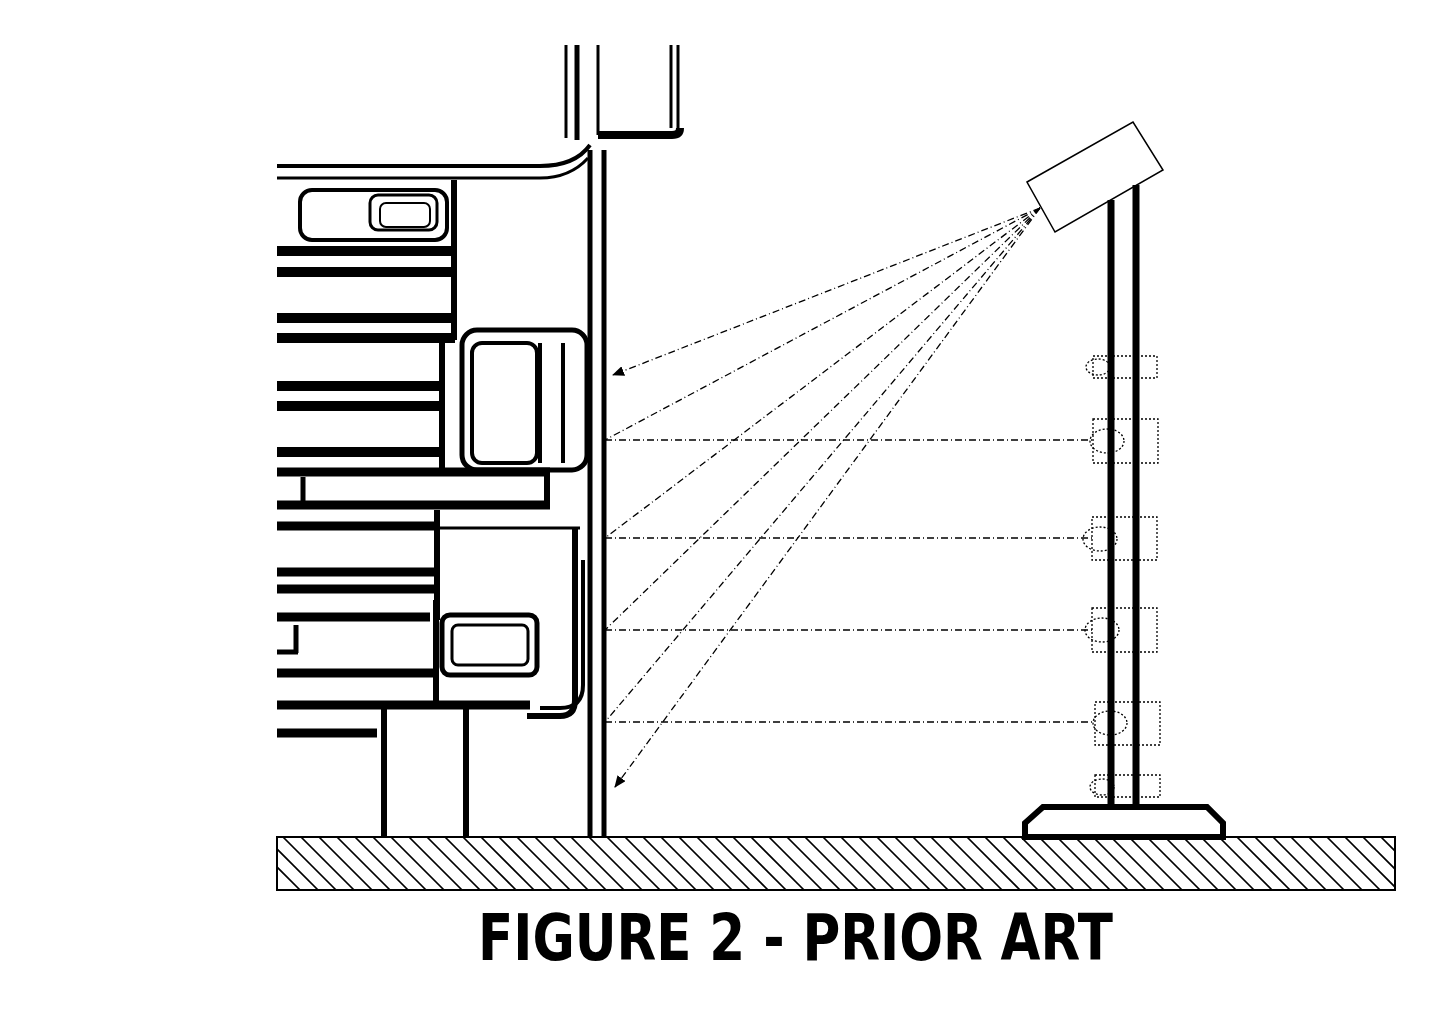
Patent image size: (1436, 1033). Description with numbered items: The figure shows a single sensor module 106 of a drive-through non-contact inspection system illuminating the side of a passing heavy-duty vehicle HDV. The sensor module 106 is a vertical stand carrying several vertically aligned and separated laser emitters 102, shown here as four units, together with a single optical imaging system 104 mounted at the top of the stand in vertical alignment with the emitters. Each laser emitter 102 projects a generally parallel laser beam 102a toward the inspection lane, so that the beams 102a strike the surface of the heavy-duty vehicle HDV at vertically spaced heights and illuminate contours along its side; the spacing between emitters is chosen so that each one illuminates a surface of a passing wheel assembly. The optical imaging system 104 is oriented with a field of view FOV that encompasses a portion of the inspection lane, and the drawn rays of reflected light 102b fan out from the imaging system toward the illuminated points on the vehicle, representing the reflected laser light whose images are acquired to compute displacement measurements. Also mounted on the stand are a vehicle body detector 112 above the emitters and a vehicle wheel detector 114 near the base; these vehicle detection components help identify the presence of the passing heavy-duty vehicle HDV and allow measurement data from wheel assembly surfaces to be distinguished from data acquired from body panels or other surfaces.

The laser emitter 102 is at (1165, 441).
The laser beam 102a is at (925, 440).
The reflected light 102b is at (835, 310).
The optical imaging system 104 is at (1083, 143).
The sensor module 106 is at (1192, 167).
The vehicle body detector 112 is at (1163, 365).
The vehicle wheel detector 114 is at (1167, 787).
The heavy-duty vehicle HDV is at (268, 300).
The field of view FOV is at (695, 335).